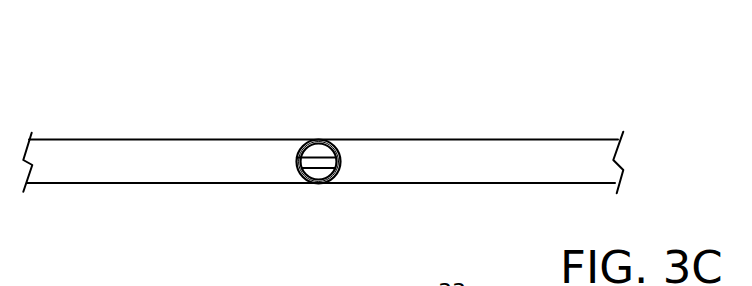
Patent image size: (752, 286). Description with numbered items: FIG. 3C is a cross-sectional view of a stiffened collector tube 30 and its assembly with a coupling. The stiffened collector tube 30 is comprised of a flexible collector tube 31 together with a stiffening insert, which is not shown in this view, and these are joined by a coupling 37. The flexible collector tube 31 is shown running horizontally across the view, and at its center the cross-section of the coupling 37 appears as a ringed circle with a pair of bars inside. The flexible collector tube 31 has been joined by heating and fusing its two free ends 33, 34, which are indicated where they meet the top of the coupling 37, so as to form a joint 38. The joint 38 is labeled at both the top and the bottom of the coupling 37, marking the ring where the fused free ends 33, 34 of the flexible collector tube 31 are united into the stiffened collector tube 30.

The stiffened collector tube 30 is at (462, 83).
The flexible collector tube 31 is at (233, 118).
The free end 33 is at (308, 138).
The free end 34 is at (328, 138).
The coupling 37 is at (297, 158).
The joint 38 is at (317, 140).